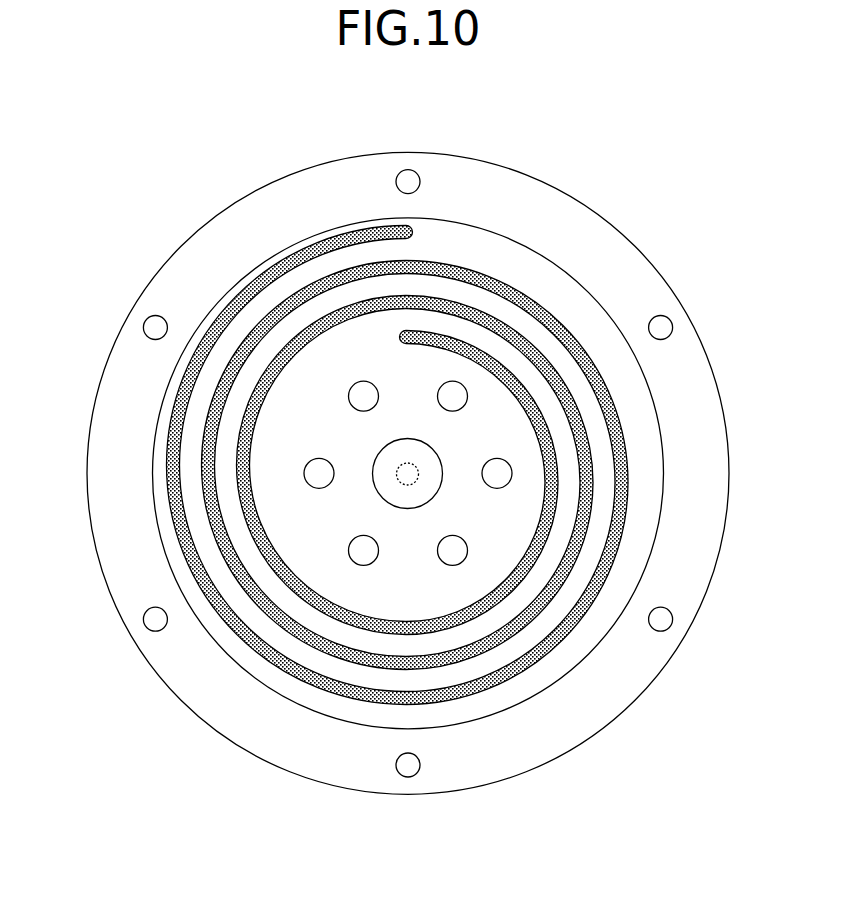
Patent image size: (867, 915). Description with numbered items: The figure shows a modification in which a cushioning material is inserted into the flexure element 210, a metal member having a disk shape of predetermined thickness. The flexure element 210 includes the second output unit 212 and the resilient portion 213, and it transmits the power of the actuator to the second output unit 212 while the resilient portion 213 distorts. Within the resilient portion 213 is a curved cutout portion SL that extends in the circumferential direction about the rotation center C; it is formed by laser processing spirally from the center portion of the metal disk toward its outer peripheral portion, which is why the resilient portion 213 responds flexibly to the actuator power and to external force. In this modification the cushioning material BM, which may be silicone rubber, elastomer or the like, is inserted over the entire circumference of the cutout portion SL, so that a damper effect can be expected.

The flexure element 210 is at (247, 208).
The second output unit 212 is at (178, 274).
The resilient portion 213 is at (172, 389).
The cutout portion SL is at (258, 657).
The cushioning material BM is at (490, 283).
The rotation center C is at (398, 479).